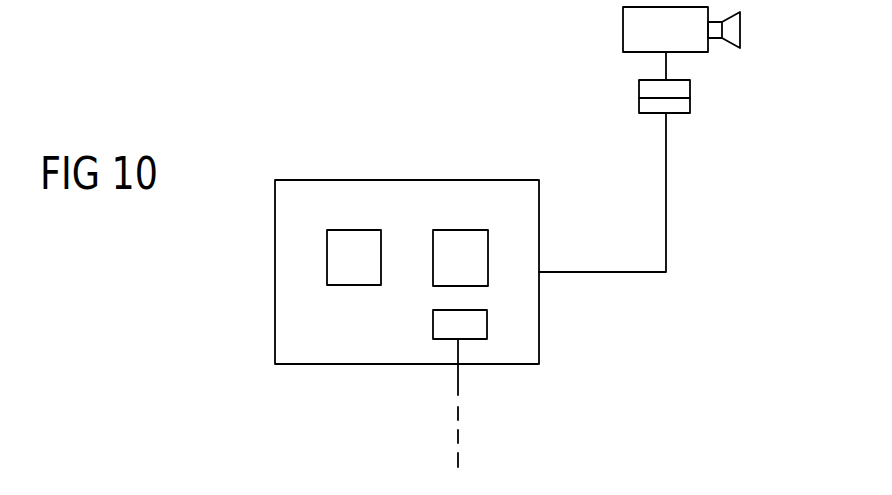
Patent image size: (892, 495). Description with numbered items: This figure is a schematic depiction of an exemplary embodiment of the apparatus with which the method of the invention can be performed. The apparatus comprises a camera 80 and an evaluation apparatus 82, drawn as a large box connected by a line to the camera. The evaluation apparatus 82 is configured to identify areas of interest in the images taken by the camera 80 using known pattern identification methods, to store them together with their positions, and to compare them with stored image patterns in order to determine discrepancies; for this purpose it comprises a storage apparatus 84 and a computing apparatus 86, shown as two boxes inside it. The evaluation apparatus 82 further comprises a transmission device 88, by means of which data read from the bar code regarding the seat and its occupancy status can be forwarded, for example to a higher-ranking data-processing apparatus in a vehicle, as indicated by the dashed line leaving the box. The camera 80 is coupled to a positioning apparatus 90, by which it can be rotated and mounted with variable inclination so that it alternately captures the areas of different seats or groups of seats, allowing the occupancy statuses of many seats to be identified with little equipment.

The camera 80 is at (623, 27).
The evaluation apparatus 82 is at (275, 322).
The storage apparatus 84 is at (350, 230).
The computing apparatus 86 is at (458, 230).
The transmission device 88 is at (487, 325).
The positioning apparatus 90 is at (639, 86).